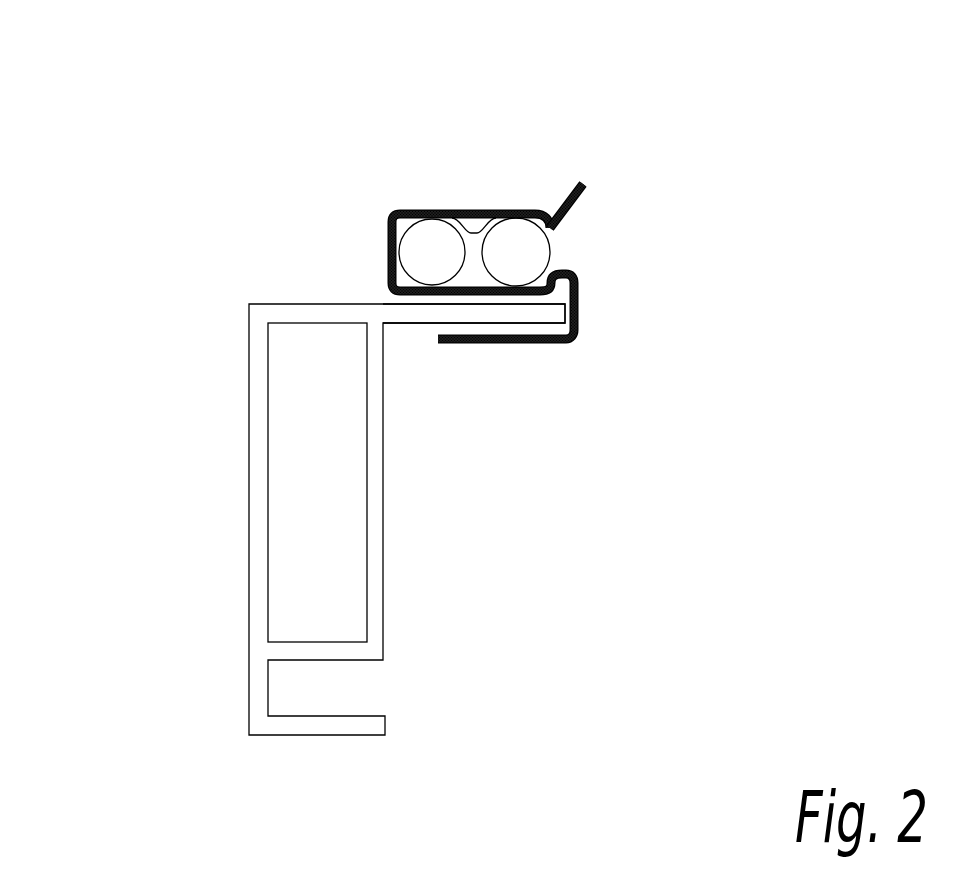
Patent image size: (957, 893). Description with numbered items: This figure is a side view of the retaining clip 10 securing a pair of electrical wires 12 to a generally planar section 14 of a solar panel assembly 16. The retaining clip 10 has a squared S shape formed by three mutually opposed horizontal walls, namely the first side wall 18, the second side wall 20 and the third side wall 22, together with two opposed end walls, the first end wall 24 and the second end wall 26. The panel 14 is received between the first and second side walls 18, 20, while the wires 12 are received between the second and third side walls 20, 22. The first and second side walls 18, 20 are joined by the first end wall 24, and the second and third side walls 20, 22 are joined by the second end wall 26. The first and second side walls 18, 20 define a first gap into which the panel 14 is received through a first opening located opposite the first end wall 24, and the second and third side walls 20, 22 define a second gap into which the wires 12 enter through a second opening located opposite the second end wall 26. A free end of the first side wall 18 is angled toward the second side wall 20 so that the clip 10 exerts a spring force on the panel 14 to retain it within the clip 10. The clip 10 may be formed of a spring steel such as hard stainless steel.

The retaining clip 10 is at (558, 212).
The electrical wires 12 is at (418, 256).
The generally planar section 14 is at (414, 323).
The solar panel assembly 16 is at (242, 436).
The first side wall 18 is at (544, 343).
The second side wall 20 is at (413, 290).
The third side wall 22 is at (437, 208).
The first end wall 24 is at (582, 298).
The second end wall 26 is at (388, 228).